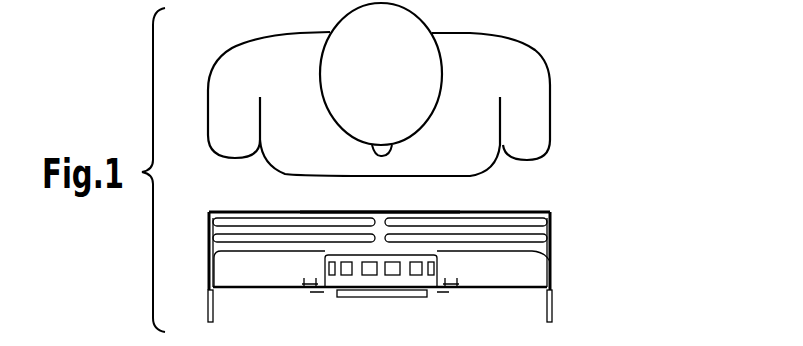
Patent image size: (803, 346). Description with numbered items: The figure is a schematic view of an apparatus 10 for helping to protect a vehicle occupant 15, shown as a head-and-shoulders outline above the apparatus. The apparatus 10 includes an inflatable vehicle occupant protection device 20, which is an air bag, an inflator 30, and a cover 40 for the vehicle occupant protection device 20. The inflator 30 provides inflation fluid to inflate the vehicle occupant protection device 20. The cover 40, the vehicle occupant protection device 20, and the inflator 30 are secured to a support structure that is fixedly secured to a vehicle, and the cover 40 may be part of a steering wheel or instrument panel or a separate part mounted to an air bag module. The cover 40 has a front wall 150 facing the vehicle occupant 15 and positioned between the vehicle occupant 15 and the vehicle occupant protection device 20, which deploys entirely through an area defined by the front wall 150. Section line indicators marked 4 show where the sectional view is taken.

The apparatus 10 is at (632, 173).
The vehicle occupant 15 is at (459, 60).
The inflatable vehicle occupant protection device 20 is at (533, 254).
The inflator 30 is at (366, 285).
The cover 40 is at (503, 212).
The front wall 150 is at (303, 212).
The section line for FIG. 4 is at (213, 187).